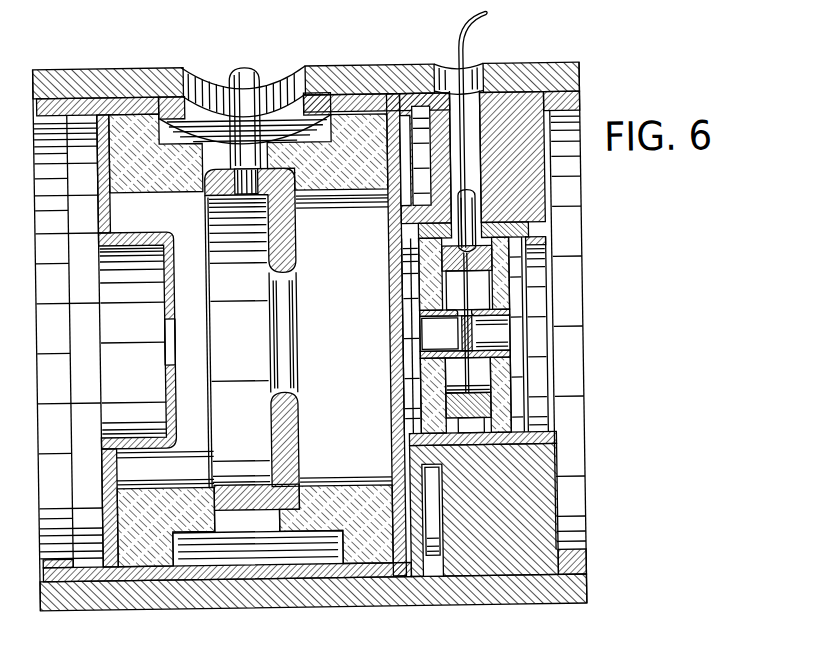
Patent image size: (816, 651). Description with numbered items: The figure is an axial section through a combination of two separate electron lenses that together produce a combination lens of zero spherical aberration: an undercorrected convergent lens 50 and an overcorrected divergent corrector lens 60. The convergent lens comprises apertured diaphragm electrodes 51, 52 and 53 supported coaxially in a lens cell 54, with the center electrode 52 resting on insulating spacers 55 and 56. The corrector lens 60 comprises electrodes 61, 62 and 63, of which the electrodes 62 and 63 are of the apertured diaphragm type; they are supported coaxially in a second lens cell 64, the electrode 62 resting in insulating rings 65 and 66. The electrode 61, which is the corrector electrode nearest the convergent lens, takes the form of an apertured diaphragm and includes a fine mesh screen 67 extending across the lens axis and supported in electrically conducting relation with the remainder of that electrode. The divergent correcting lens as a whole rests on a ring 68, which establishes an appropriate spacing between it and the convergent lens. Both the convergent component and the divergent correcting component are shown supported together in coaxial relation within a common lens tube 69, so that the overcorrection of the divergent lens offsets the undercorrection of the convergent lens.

The undercorrected convergent lens 50 is at (328, 372).
The apertured diaphragm electrode 51 is at (176, 302).
The center electrode 52 is at (298, 272).
The apertured diaphragm electrode 53 is at (412, 291).
The lens cell 54 is at (280, 575).
The insulating spacer 55 is at (157, 498).
The insulating spacer 56 is at (323, 495).
The overcorrected divergent lens 60 is at (493, 334).
The electrode 61 is at (430, 322).
The electrode 62 is at (470, 292).
The electrode 63 is at (487, 349).
The lens cell 64 is at (500, 446).
The insulating ring 65 is at (433, 378).
The insulating ring 66 is at (512, 389).
The fine mesh screen 67 is at (432, 348).
The ring 68 is at (518, 498).
The lens tube 69 is at (433, 587).